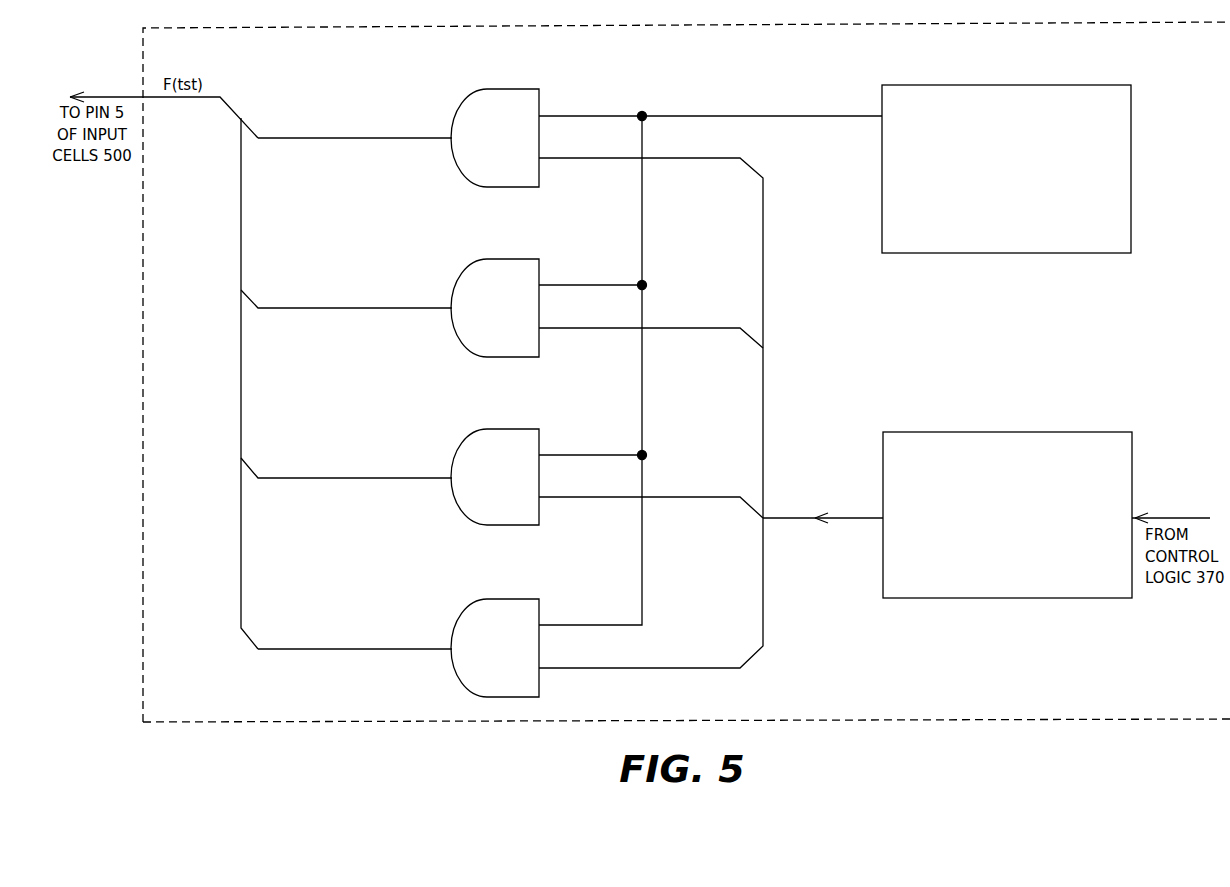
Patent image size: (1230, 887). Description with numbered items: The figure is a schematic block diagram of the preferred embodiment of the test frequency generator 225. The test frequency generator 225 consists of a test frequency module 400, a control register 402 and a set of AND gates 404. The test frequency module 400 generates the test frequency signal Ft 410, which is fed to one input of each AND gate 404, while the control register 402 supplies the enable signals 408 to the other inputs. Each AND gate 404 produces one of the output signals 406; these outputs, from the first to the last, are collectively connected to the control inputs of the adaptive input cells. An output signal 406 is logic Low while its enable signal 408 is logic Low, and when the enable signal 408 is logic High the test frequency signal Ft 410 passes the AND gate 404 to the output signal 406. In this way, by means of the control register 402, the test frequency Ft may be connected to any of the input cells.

The test frequency generator 225 is at (1229, 273).
The test frequency module 400 is at (991, 208).
The control register 402 is at (992, 554).
The AND gate 404 is at (514, 96).
The output signal F(i) 406 is at (391, 136).
The enable signal En(i) 408 is at (703, 160).
The test frequency signal Ft 410 is at (819, 114).